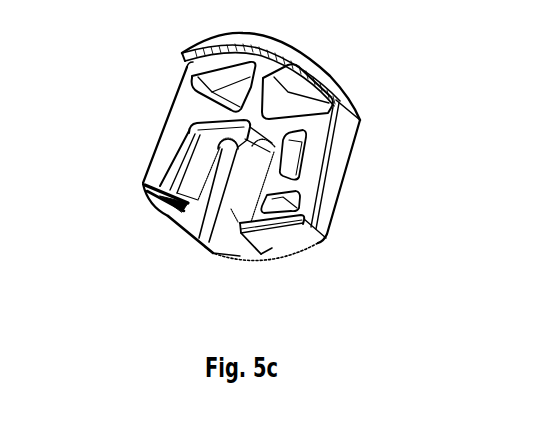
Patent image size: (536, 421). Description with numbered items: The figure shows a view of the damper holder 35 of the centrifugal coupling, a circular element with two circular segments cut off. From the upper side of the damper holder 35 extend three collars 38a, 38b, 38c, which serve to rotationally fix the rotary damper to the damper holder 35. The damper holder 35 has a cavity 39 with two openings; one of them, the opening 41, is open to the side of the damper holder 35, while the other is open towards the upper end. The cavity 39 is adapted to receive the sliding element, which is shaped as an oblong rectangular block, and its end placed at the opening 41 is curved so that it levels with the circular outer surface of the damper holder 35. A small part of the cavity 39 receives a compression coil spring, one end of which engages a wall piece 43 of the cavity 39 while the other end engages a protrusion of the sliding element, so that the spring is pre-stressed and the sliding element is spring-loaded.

The damper holder 35 is at (121, 46).
The collar 38a is at (258, 44).
The collar 38b is at (261, 232).
The collar 38c is at (153, 209).
The cavity 39 is at (239, 187).
The opening 41 is at (212, 256).
The wall piece 43 is at (177, 208).